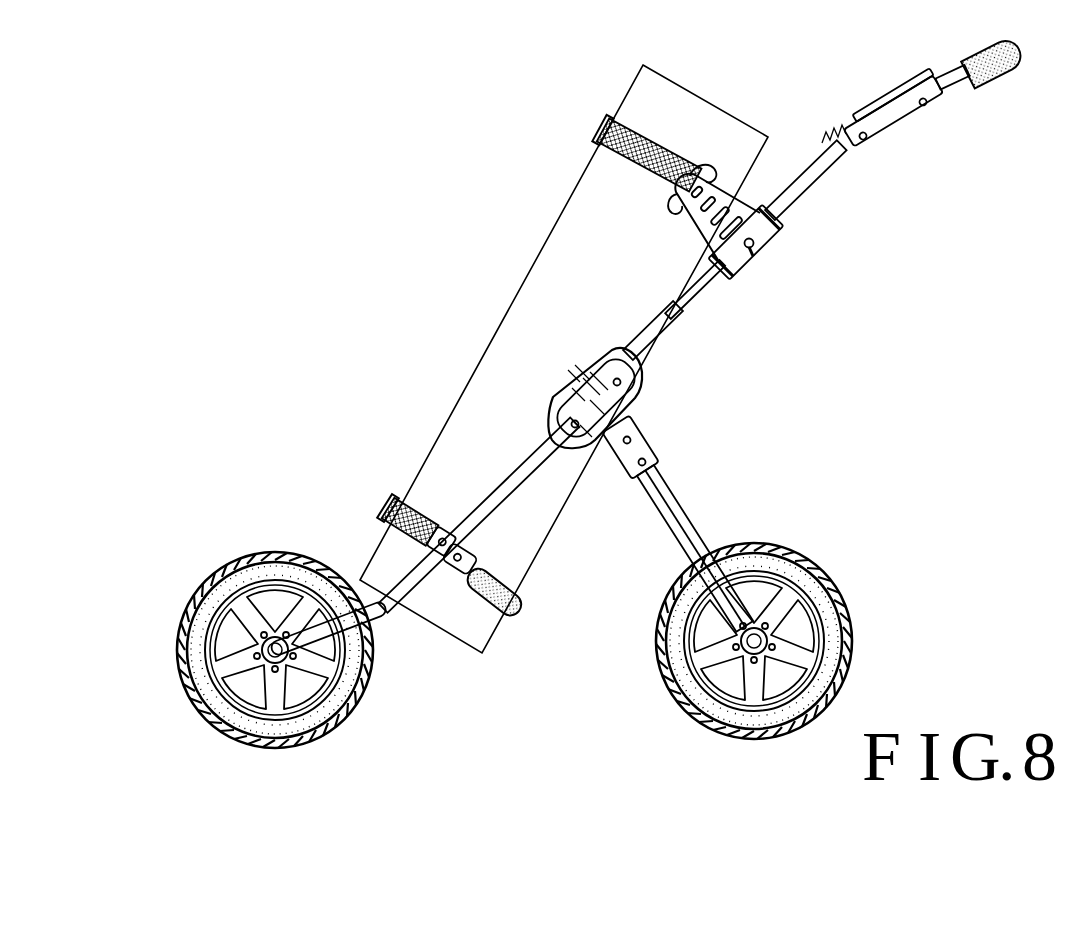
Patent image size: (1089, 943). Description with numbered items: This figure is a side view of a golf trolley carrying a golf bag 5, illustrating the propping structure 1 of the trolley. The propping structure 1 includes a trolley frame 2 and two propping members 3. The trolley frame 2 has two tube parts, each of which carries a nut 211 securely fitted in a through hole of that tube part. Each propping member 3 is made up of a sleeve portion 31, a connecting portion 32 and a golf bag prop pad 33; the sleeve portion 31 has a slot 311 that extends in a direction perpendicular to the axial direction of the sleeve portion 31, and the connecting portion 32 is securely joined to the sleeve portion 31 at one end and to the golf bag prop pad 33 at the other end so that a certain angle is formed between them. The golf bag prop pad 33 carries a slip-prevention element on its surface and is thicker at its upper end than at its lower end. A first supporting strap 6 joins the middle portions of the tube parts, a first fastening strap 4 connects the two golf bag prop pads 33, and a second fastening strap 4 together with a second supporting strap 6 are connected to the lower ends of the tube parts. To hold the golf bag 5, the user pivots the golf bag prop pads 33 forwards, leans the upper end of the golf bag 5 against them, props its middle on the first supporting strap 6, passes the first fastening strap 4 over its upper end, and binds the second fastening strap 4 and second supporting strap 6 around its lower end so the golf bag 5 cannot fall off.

The propping structure 1 is at (732, 405).
The trolley frame 2 is at (675, 494).
The propping member 3 is at (771, 285).
The sleeve portion 31 is at (752, 231).
The slot 311 is at (788, 277).
The connecting portion 32 is at (707, 288).
The golf bag prop pad 33 is at (700, 165).
The fastening strap 4 is at (598, 128).
The golf bag 5 is at (683, 98).
The supporting strap 6 is at (518, 622).
The nut 211 is at (817, 172).